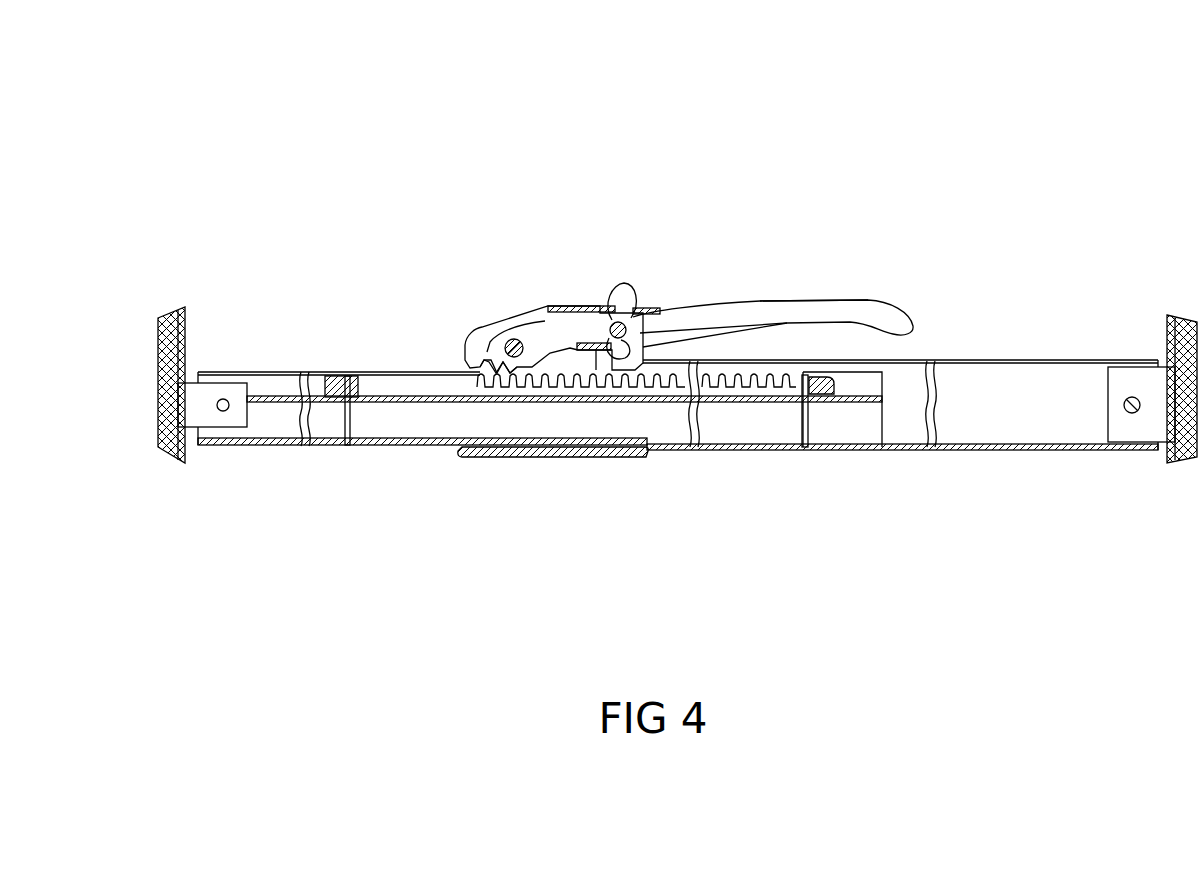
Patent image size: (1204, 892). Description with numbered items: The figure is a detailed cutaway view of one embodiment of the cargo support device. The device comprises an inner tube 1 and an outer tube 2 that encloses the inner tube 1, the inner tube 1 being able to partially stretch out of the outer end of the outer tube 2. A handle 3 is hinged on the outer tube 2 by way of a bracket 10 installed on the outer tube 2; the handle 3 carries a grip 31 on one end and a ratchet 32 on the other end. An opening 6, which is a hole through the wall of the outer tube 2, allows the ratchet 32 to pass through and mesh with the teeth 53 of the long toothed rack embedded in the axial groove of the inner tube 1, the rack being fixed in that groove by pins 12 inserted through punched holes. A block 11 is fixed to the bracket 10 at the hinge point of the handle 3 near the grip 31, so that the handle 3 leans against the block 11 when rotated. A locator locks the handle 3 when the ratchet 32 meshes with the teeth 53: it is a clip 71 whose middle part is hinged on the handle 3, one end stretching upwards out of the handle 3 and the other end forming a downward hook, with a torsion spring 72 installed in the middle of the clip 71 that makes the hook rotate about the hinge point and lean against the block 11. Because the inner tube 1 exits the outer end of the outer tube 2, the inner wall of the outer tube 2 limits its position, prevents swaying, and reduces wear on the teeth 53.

The inner tube 1 is at (328, 443).
The outer tube 2 is at (997, 433).
The handle 3 is at (597, 288).
The opening 6 is at (478, 372).
The bracket 10 is at (517, 455).
The block 11 is at (597, 352).
The pins 12 is at (345, 377).
The grip 31 is at (735, 310).
The ratchet 32 is at (480, 353).
The teeth 53 is at (780, 380).
The clip 71 is at (620, 312).
The torsion spring 72 is at (648, 310).